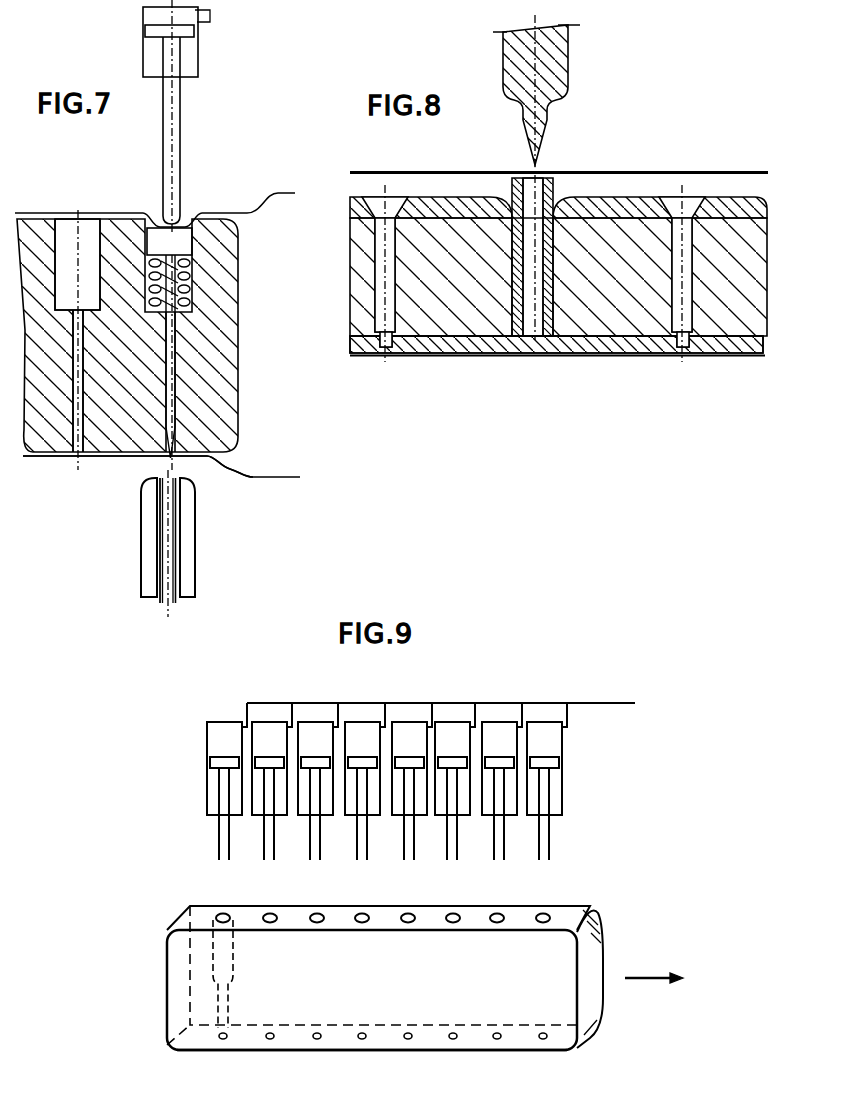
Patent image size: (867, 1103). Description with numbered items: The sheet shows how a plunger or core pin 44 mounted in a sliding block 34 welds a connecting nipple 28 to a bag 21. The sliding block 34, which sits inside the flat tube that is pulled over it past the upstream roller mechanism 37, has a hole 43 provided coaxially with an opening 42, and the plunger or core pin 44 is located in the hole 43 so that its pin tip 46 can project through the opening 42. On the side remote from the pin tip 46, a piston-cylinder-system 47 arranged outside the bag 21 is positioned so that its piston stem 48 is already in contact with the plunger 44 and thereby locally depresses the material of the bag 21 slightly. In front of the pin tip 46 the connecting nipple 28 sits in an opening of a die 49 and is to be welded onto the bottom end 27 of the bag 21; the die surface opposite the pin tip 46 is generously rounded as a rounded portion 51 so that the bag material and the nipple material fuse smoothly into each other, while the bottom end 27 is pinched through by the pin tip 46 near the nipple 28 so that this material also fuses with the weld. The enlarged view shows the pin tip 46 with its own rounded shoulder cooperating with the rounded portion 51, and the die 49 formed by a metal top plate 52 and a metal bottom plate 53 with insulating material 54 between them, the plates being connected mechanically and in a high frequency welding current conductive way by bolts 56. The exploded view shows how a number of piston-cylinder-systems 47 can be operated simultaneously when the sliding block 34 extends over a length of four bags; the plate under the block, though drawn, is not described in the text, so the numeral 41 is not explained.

In FIG. 7, the bag 21 is at (282, 478).
In FIG. 8, the bag 21 is at (425, 170).
In FIG. 7, the bottom end 27 is at (233, 463).
In FIG. 7, the connecting nipple 28 is at (153, 602).
In FIG. 8, the connecting nipple 28 is at (557, 193).
In FIG. 7, the sliding block 34 is at (40, 437).
In FIG. 9, the sliding block 34 is at (587, 977).
In FIG. 8, the upstream roller mechanism 37 is at (660, 164).
In FIG. 7, the bottom plate 41 is at (98, 457).
In FIG. 9, the bottom plate 41 is at (510, 1042).
In FIG. 7, the opening 42 is at (78, 462).
In FIG. 9, the opening 42 is at (350, 1040).
In FIG. 7, the hole 43 is at (68, 230).
In FIG. 9, the hole 43 is at (213, 957).
In FIG. 7, the plunger or core pin 44 is at (170, 247).
In FIG. 7, the pin tip 46 is at (163, 427).
In FIG. 8, the pin tip 46 is at (538, 110).
In FIG. 7, the piston-cylinder-system 47 is at (200, 60).
In FIG. 9, the piston-cylinder-system 47 is at (515, 790).
In FIG. 7, the piston stem 48 is at (170, 133).
In FIG. 7, the die 49 is at (188, 542).
In FIG. 8, the die 49 is at (476, 358).
In FIG. 7, the rounded portion 51 is at (183, 463).
In FIG. 8, the rounded portion 51 is at (503, 193).
In FIG. 8, the metal top plate 52 is at (730, 208).
In FIG. 8, the metal bottom plate 53 is at (732, 343).
In FIG. 8, the insulating material 54 is at (355, 302).
In FIG. 8, the bolt 56 is at (678, 280).